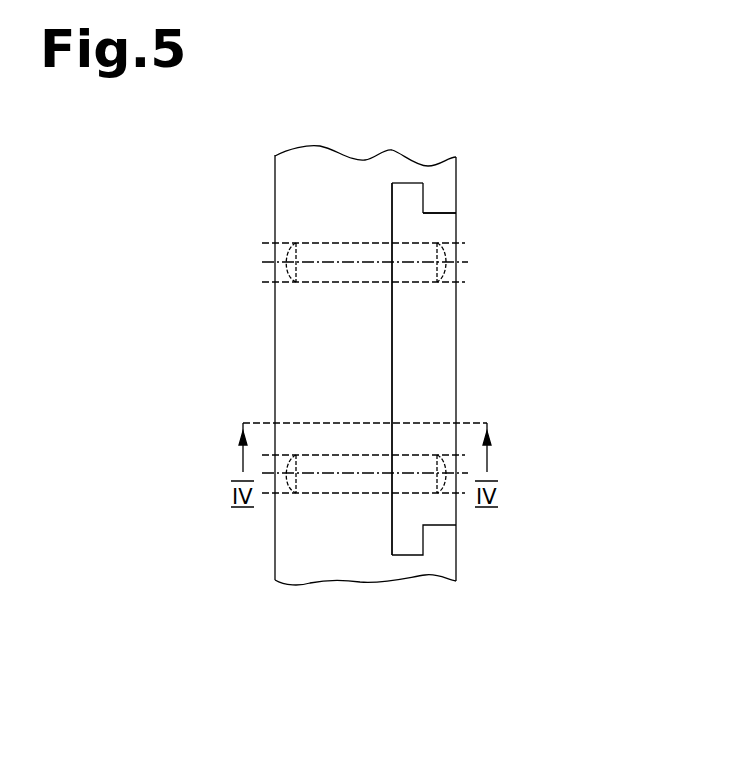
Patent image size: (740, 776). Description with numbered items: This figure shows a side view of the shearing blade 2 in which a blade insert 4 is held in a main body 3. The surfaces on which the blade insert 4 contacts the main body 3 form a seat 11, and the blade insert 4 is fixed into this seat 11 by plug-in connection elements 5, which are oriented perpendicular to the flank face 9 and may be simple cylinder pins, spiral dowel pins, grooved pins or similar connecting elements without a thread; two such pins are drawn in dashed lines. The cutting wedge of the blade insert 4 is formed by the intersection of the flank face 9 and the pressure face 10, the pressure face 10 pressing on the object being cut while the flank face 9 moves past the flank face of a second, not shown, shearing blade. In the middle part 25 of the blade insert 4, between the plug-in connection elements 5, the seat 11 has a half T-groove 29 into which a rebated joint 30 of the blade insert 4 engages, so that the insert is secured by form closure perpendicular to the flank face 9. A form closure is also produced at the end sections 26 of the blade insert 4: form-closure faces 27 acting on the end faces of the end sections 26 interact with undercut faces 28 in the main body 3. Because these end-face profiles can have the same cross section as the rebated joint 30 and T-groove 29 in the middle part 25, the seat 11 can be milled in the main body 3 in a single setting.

The shearing blade 2 is at (534, 121).
The main body 3 is at (307, 572).
The blade insert 4 is at (437, 355).
The plug-in connection element 5 is at (280, 244).
The flank face 9 is at (456, 558).
The pressure face 10 is at (346, 549).
The seat 11 is at (425, 167).
The middle part 25 is at (382, 372).
The end sections 26 is at (382, 192).
The form-closure faces 27 is at (427, 189).
The undercut faces 28 is at (424, 207).
The half T-groove 29 is at (458, 226).
The rebated joint 30 is at (403, 200).